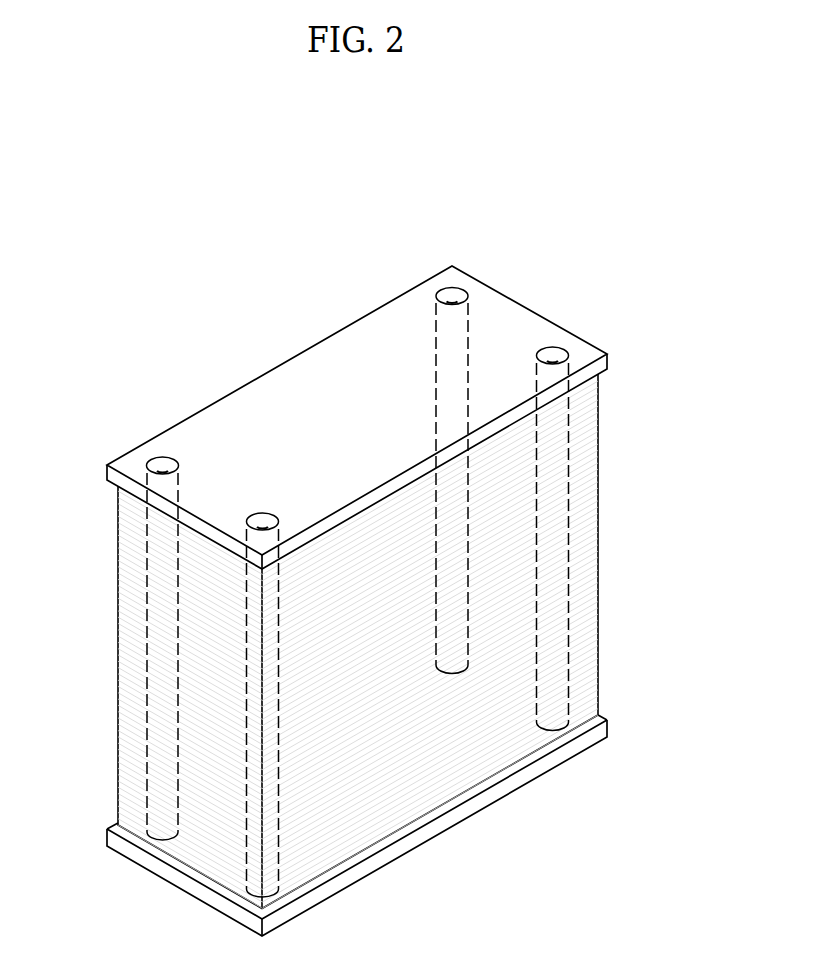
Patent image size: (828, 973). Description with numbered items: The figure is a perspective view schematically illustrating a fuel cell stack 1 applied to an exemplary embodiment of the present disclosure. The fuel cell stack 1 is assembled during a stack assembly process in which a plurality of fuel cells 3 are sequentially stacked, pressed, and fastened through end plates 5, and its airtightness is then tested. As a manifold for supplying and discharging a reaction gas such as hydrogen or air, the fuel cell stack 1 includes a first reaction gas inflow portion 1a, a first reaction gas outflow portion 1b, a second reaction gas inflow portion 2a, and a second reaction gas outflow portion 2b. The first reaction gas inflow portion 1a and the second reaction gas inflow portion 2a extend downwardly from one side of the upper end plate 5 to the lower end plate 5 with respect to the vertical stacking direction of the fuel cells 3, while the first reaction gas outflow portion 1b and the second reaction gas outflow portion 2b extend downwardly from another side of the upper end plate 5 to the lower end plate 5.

The fuel cell stack 1 is at (321, 140).
The first reaction gas inflow portion 1a is at (570, 450).
The first reaction gas outflow portion 1b is at (147, 698).
The second reaction gas inflow portion 2a is at (470, 336).
The second reaction gas outflow portion 2b is at (243, 846).
The fuel cells 3 is at (402, 827).
The end plates 5 is at (290, 376).